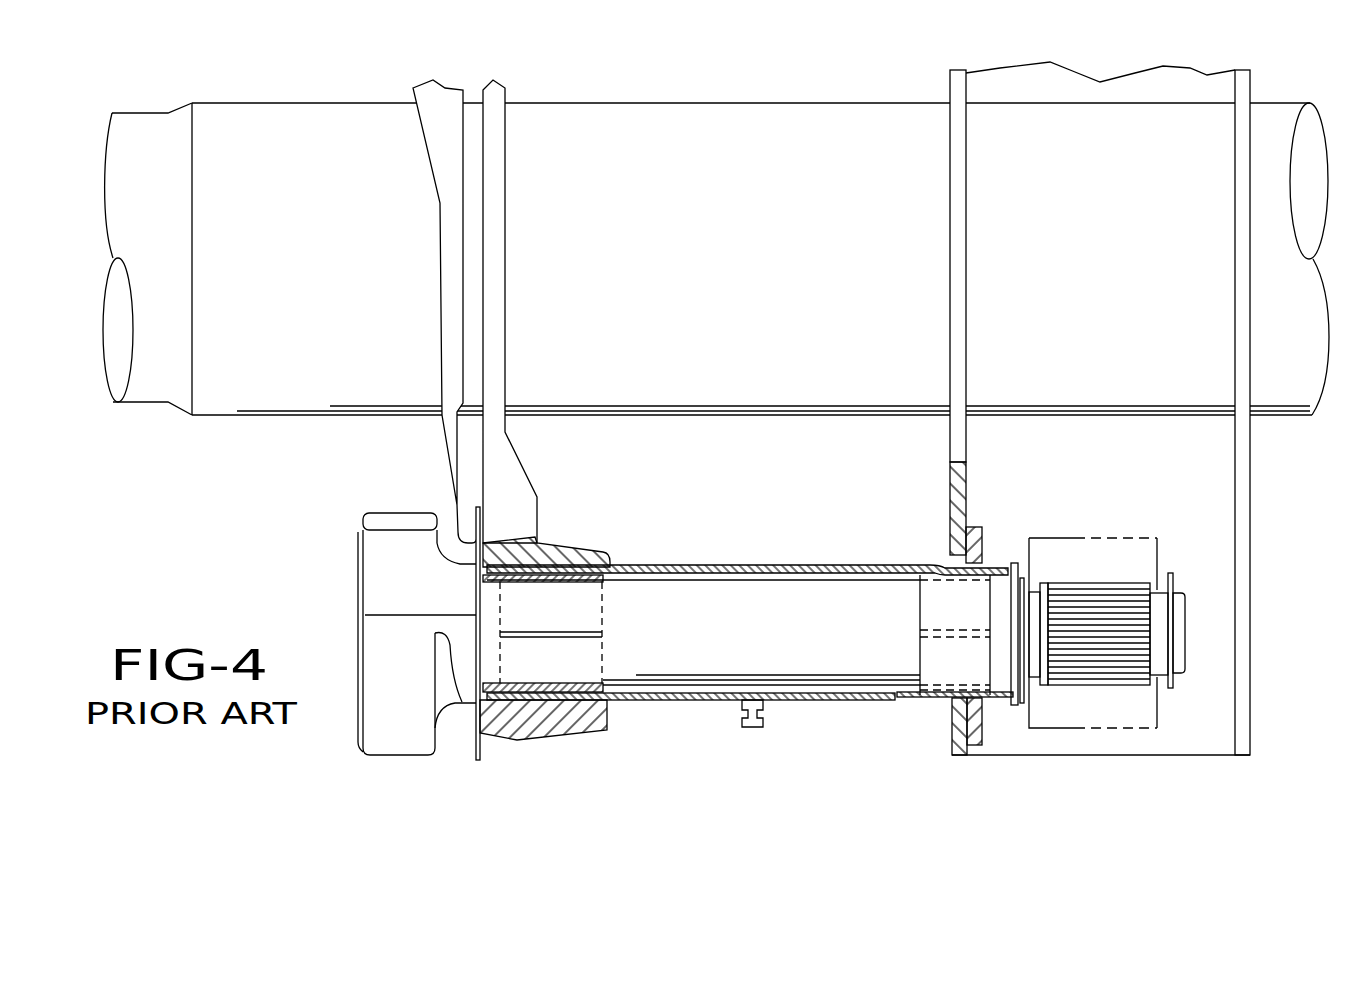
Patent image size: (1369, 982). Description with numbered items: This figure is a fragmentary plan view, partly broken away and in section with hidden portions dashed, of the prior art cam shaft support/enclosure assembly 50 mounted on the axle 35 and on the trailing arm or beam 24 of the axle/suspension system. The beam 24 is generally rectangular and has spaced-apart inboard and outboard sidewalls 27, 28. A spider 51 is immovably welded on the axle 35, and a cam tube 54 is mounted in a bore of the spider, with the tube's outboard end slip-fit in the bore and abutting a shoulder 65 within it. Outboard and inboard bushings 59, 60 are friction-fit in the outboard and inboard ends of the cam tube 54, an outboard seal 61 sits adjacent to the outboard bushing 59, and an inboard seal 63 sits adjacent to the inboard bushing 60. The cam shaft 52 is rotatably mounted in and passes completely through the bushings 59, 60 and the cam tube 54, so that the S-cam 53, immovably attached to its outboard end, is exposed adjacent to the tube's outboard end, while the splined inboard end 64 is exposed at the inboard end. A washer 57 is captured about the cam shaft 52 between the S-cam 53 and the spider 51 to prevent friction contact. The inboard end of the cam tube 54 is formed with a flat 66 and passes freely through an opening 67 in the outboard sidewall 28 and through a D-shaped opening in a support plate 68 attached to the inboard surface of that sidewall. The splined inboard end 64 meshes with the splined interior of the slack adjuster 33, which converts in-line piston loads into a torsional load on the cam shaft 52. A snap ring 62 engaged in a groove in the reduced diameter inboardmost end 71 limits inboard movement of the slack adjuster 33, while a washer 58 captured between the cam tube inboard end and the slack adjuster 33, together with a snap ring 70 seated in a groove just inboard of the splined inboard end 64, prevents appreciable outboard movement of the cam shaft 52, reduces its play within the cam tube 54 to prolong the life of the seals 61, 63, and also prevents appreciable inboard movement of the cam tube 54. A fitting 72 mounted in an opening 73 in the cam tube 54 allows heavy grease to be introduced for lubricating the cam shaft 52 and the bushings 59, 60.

The trailing arm or beam 24 is at (1252, 620).
The inboard sidewall 27 is at (1243, 473).
The outboard sidewall 28 is at (958, 447).
The slack adjuster 33 is at (1147, 552).
The axle 35 is at (247, 362).
The cam shaft support/enclosure assembly 50 is at (837, 706).
The spider 51 is at (457, 437).
The cam shaft 52 is at (705, 643).
The S-cam 53 is at (403, 723).
The cam tube 54 is at (695, 565).
The washer 57 is at (477, 740).
The washer 58 is at (1018, 702).
The outboard bushing 59 is at (550, 575).
The inboard bushing 60 is at (937, 617).
The outboard seal 61 is at (488, 575).
The snap ring 62 is at (1170, 688).
The inboard seal 63 is at (1003, 565).
The splined inboard end 64 is at (1100, 620).
The shoulder 65 is at (500, 703).
The flat 66 is at (927, 698).
The opening 67 is at (953, 703).
The support plate 68 is at (972, 530).
The snap ring 70 is at (1025, 688).
The reduced diameter inboardmost end 71 is at (1177, 662).
The fitting 72 is at (750, 724).
The opening 73 is at (747, 700).